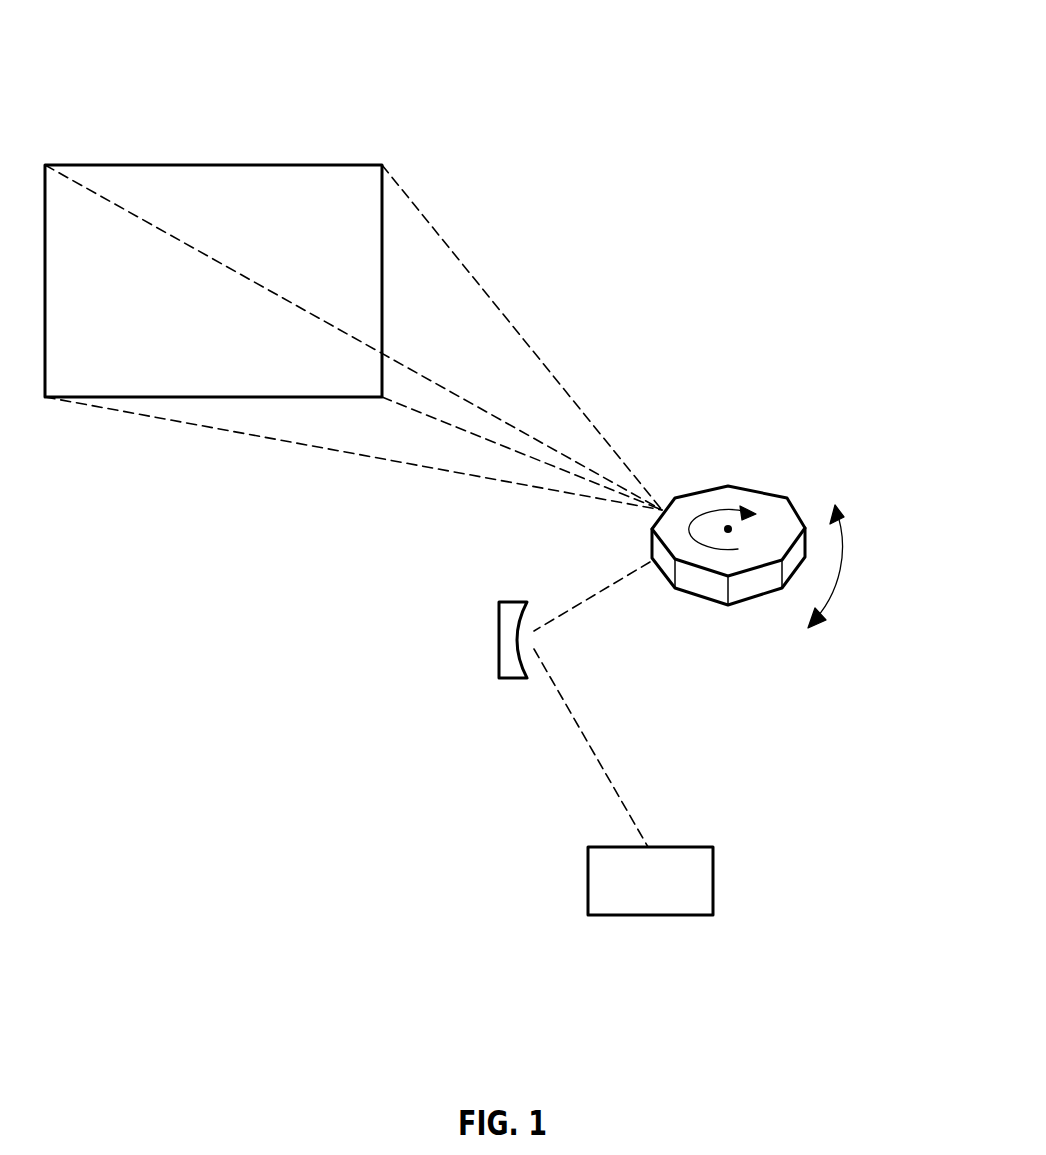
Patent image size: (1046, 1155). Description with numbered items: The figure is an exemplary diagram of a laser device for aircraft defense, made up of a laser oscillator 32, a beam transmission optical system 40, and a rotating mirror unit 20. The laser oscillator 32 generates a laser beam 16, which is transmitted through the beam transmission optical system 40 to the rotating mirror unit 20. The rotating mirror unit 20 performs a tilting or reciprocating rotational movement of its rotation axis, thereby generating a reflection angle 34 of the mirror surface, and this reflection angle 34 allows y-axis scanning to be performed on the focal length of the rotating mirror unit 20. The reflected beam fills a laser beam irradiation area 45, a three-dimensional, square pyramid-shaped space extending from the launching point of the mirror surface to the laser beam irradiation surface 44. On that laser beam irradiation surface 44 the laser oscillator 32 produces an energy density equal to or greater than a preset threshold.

The laser beam irradiation surface 44 is at (213, 165).
The laser beam irradiation area 45 is at (238, 446).
The rotating mirror unit 20 is at (782, 518).
The reflection angle 34 is at (850, 585).
The beam transmission optical system 40 is at (499, 640).
The laser beam 16 is at (580, 735).
The laser oscillator 32 is at (588, 880).